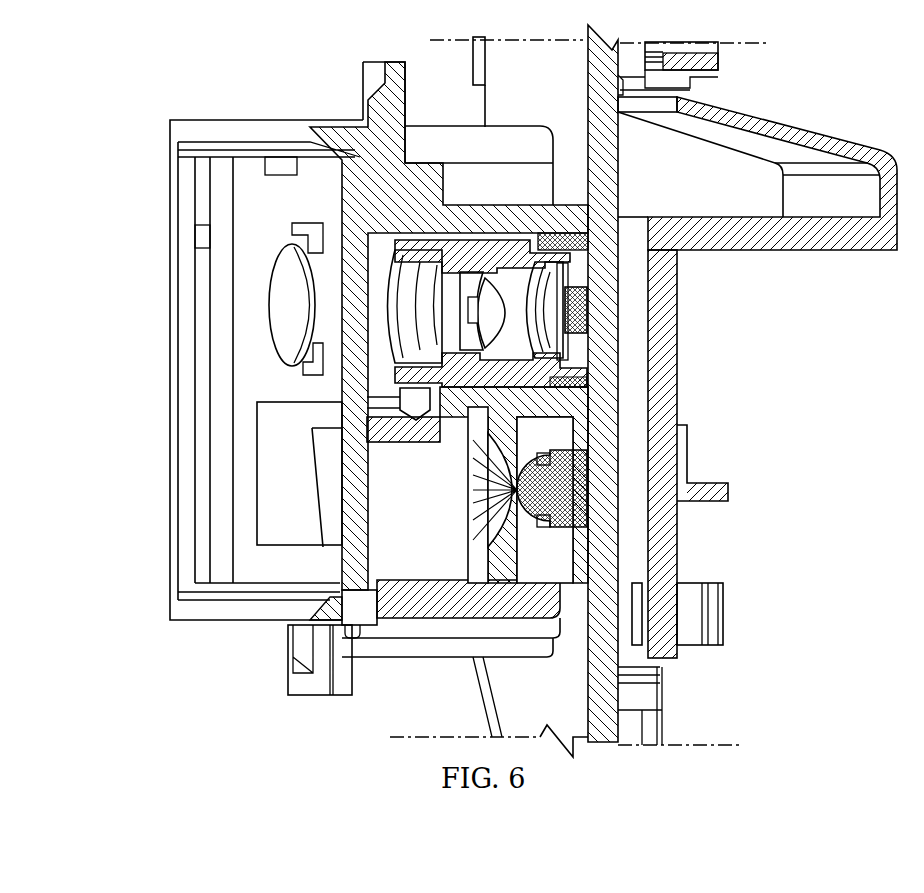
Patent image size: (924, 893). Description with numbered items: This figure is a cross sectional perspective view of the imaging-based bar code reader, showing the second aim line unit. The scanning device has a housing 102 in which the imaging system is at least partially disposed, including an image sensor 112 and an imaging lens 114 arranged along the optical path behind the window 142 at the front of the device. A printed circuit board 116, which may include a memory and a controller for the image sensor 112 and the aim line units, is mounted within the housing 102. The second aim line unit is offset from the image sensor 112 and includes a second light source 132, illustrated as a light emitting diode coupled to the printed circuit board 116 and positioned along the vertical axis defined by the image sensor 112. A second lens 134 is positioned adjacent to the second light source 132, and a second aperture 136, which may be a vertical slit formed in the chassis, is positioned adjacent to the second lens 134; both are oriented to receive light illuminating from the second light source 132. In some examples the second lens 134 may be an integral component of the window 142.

The housing 102 is at (783, 237).
The image sensor 112 is at (590, 294).
The imaging lens 114 is at (537, 250).
The printed circuit board 116 is at (610, 428).
The second light source 132 is at (577, 498).
The second lens 134 is at (493, 507).
The second aperture 136 is at (517, 490).
The window 142 is at (223, 387).